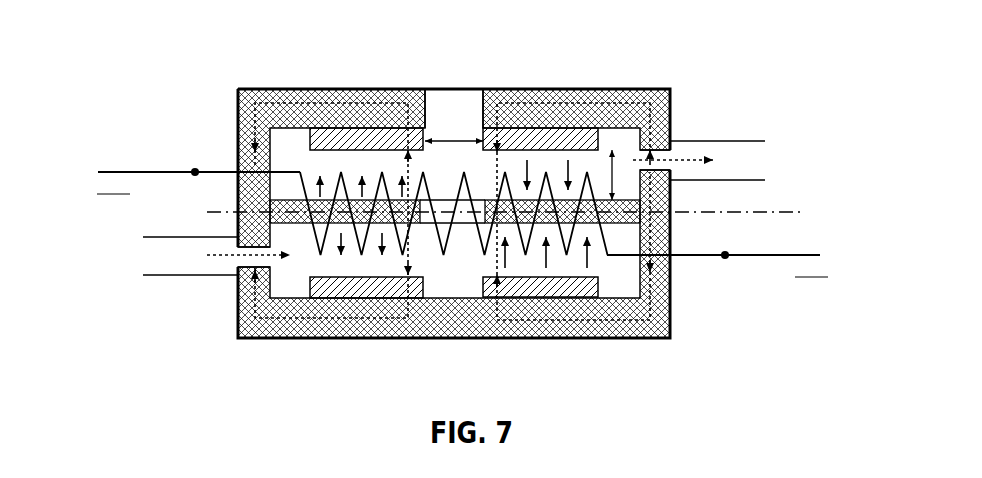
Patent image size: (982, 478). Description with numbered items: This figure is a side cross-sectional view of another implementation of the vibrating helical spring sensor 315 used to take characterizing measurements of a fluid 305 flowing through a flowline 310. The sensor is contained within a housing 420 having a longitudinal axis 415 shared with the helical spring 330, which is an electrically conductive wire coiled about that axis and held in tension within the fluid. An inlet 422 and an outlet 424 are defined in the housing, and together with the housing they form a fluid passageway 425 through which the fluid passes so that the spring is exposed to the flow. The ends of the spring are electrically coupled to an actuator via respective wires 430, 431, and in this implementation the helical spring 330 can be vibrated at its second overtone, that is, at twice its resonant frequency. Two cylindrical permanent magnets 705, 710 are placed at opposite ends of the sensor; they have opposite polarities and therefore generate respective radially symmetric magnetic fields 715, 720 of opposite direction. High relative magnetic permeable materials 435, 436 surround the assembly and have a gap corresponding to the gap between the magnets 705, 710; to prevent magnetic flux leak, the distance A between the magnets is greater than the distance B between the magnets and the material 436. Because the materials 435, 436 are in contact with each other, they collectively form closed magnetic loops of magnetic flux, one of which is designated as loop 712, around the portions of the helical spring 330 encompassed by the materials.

The fluid 305 is at (215, 255).
The flowline 310 is at (765, 141).
The helical spring sensor 315 is at (458, 235).
The helical spring 330 is at (342, 173).
The longitudinal axis 415 is at (775, 212).
The housing 420 is at (465, 338).
The inlet 422 is at (240, 265).
The outlet 424 is at (672, 146).
The fluid passageway 425 is at (577, 264).
The wire 430 is at (158, 172).
The wire 431 is at (745, 258).
The high relative magnetic permeable material 435 is at (598, 88).
The high relative magnetic permeable material 436 is at (672, 278).
The cylindrical permanent magnet 705 is at (343, 283).
The cylindrical permanent magnet 710 is at (528, 282).
The closed magnetic loop 712 is at (237, 337).
The radially symmetric magnetic field 715 is at (402, 167).
The radially symmetric magnetic field 720 is at (530, 160).